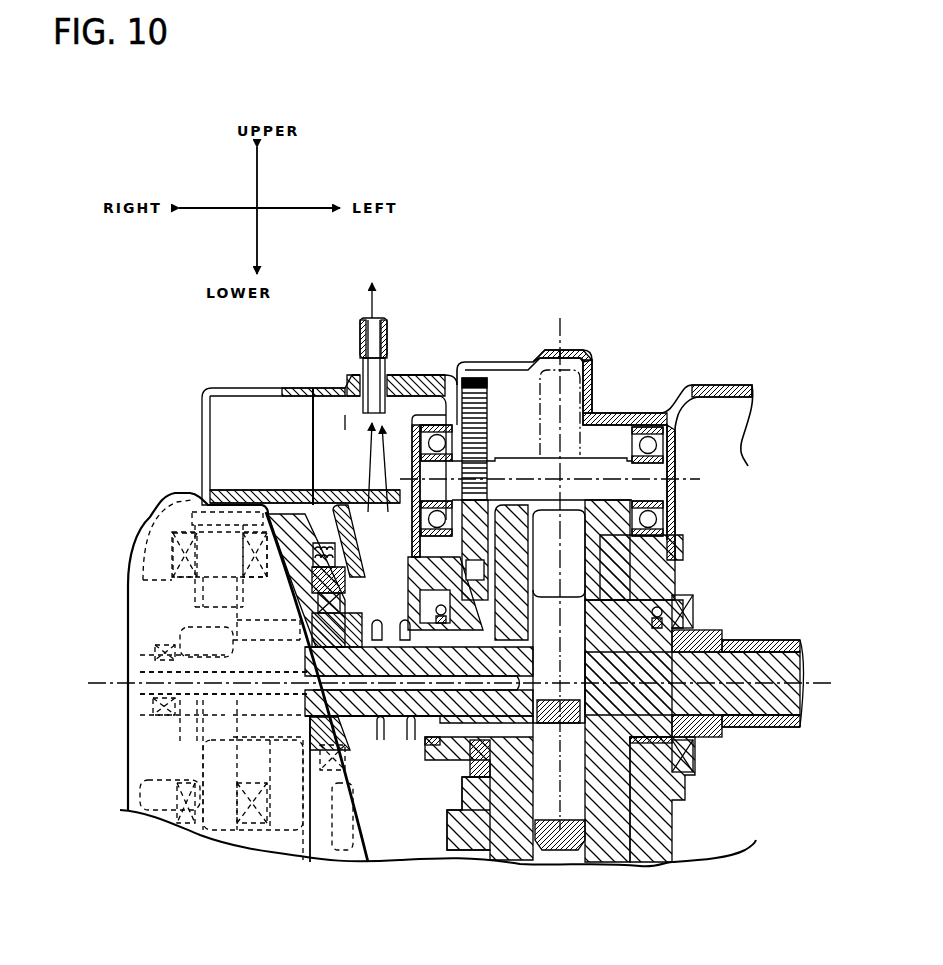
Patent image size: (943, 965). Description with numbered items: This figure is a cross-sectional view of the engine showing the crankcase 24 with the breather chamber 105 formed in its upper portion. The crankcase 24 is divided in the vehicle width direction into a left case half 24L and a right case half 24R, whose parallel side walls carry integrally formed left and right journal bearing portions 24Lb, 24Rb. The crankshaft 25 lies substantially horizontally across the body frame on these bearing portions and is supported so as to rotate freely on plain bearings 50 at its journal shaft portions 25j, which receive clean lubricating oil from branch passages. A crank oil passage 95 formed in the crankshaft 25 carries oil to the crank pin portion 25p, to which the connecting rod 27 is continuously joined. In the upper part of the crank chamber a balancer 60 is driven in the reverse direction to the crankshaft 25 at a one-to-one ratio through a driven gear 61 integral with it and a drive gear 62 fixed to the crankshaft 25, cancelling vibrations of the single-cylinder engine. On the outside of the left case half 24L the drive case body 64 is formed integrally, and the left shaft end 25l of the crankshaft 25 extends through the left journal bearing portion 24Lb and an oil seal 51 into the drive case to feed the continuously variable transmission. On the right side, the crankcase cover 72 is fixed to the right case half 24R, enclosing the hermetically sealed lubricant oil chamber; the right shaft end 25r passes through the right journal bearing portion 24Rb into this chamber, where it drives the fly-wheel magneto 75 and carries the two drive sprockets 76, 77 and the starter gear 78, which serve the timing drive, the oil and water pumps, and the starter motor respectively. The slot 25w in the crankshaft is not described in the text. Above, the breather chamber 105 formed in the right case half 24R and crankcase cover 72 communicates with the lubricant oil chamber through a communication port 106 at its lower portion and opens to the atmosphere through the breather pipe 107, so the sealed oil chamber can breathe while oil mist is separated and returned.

The crankcase 24 is at (625, 275).
The right case half 24R is at (512, 356).
The left case half 24L is at (573, 356).
The left journal bearing portion 24Lb is at (653, 780).
The right journal bearing portion 24Rb is at (425, 815).
The crankshaft 25 is at (782, 645).
The journal shaft portion 25j is at (728, 620).
The left shaft end 25l is at (775, 728).
The crank pin portion 25p is at (520, 832).
The right shaft end 25r is at (272, 728).
The shaft slot 25w is at (561, 616).
The connecting rod 27 is at (565, 850).
The plain bearing 50 is at (428, 606).
The oil seal 51 is at (695, 757).
The balancer 60 is at (530, 470).
The driven gear 61 is at (470, 385).
The drive gear 62 is at (477, 795).
The drive case body 64 is at (718, 385).
The crankcase cover 72 is at (412, 378).
The fly-wheel magneto 75 is at (166, 540).
The drive sprocket 76 is at (407, 740).
The drive sprocket 77 is at (381, 740).
The starter gear 78 is at (364, 500).
The crank oil passage 95 is at (486, 698).
The breather chamber 105 is at (265, 410).
The communication port 106 is at (362, 425).
The breather pipe 107 is at (362, 335).